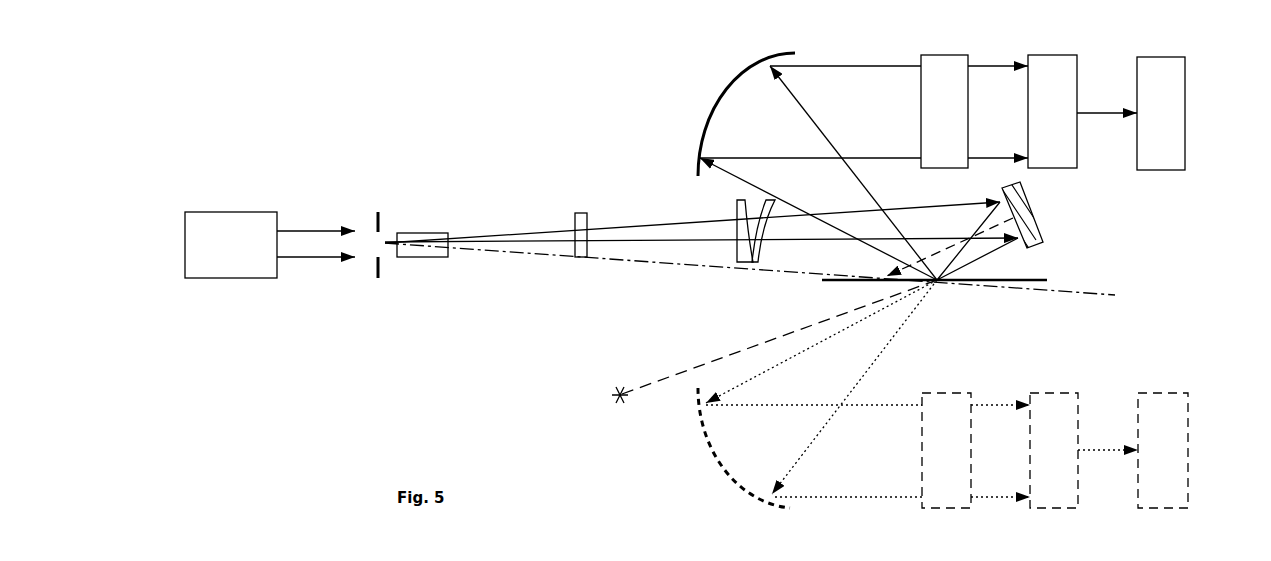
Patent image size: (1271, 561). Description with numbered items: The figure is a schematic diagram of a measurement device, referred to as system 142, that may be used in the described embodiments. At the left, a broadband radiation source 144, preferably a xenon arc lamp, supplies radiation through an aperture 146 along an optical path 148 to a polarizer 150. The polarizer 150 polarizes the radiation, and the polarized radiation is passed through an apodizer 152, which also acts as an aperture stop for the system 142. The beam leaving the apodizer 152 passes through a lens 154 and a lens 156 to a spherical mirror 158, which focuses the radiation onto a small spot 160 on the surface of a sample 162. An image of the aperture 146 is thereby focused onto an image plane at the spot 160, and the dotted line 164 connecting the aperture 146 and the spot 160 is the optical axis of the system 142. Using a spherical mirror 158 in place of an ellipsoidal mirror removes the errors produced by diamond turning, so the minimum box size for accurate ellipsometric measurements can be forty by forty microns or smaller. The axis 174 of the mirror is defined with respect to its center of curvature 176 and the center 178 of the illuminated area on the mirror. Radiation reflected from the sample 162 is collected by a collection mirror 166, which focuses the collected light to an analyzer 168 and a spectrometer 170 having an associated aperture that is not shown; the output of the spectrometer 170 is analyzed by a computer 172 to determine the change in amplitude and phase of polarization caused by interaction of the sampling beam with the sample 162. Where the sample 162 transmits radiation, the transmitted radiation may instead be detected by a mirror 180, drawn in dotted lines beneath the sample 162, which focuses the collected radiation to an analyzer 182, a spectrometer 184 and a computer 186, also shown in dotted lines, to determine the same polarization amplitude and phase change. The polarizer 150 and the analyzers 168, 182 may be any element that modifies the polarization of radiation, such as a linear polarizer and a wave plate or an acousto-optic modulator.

The system 142 is at (397, 54).
The broadband radiation source 144 is at (232, 212).
The aperture 146 is at (386, 212).
The optical path 148 is at (387, 245).
The polarizer 150 is at (435, 233).
The apodizer 152 is at (584, 213).
The lens 154 is at (734, 248).
The lens 156 is at (760, 258).
The spherical mirror 158 is at (1028, 192).
The spot 160 is at (939, 283).
The sample 162 is at (1040, 279).
The optical axis 164 is at (545, 257).
The collection mirror 166 is at (745, 78).
The analyzer 168 is at (940, 55).
The spectrometer 170 is at (1045, 55).
The computer 172 is at (1155, 57).
The axis 174 is at (722, 347).
The center of curvature 176 is at (614, 400).
The center 178 is at (1012, 216).
The mirror 180 is at (728, 470).
The analyzer 182 is at (945, 393).
The spectrometer 184 is at (1053, 393).
The computer 186 is at (1165, 393).